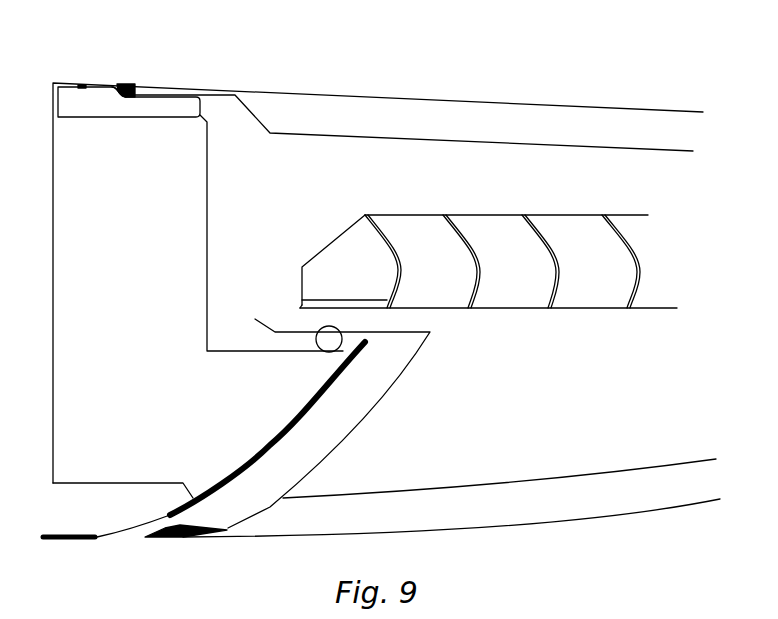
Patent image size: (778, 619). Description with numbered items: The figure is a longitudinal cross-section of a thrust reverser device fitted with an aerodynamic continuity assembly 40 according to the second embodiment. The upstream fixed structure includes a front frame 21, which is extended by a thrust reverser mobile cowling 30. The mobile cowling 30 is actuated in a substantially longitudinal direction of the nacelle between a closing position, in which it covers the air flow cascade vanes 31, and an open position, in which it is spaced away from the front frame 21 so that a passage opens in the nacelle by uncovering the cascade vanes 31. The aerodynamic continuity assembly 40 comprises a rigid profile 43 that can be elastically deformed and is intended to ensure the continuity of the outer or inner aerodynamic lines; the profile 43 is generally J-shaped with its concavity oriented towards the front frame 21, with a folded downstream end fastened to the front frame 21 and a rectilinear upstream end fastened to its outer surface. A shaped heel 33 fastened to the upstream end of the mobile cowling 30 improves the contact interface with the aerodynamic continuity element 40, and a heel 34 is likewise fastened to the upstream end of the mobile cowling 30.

The front frame 21 is at (75, 230).
The thrust reverser mobile cowling 30 is at (281, 518).
The air flow cascade vanes 31 is at (508, 215).
The heel 33 is at (127, 85).
The heel 34 is at (162, 538).
The aerodynamic continuity assembly 40 is at (91, 74).
The rigid profile 43 is at (102, 83).